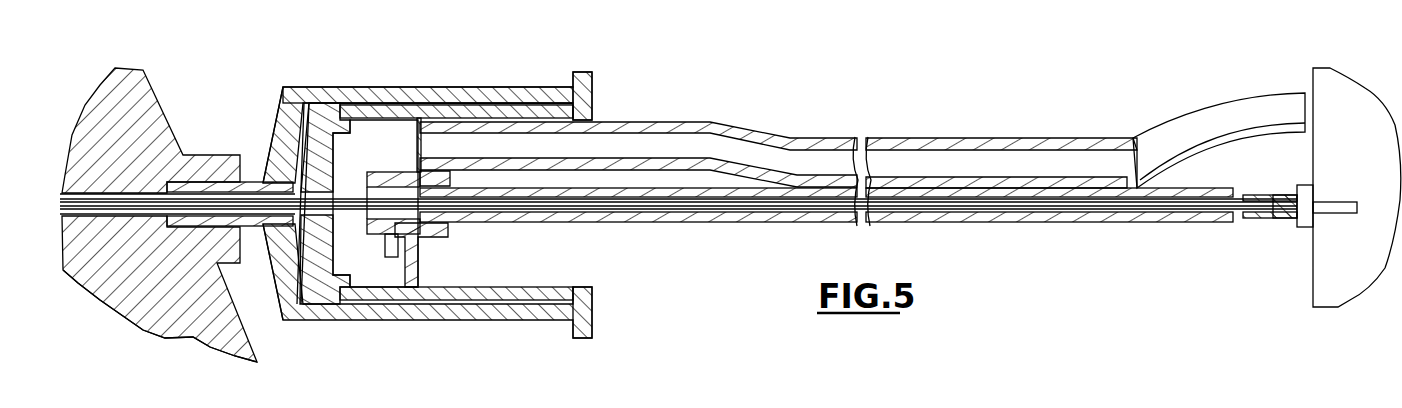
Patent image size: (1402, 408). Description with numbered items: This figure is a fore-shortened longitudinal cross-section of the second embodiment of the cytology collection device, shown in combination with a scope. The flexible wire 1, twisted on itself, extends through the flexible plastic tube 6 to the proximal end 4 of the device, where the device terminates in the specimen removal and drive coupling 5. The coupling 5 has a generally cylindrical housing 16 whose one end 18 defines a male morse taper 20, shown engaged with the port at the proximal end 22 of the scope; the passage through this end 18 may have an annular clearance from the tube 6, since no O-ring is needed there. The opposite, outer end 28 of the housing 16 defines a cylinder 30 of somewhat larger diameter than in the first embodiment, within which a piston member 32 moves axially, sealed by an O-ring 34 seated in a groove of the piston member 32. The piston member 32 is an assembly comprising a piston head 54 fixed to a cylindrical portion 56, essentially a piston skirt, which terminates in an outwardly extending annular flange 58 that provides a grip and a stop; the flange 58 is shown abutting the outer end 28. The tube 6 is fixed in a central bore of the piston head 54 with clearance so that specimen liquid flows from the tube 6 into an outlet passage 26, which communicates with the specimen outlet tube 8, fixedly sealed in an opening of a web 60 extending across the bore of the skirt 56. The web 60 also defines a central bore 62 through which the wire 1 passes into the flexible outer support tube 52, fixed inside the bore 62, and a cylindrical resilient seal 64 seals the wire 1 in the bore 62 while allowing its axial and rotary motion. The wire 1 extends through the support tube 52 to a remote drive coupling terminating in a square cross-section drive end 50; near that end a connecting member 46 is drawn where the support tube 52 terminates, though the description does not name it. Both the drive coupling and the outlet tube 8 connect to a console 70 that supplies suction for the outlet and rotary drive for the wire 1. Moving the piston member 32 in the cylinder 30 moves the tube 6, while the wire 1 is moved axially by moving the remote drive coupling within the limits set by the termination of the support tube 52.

The flexible wire 1 is at (73, 198).
The proximal end 4 is at (126, 180).
The specimen removal and drive coupling 5 is at (428, 68).
The flexible plastic tube 6 is at (97, 218).
The specimen outlet tube 8 is at (696, 147).
The cylindrical housing 16 is at (388, 330).
The end 18 is at (248, 145).
The male morse taper 20 is at (212, 182).
The proximal end of the scope 22 is at (183, 323).
The outlet passage 26 is at (396, 146).
The outer end of the housing 28 is at (548, 322).
The cylinder 30 is at (312, 103).
The piston member 32 is at (492, 112).
The O-ring 34 is at (342, 103).
The coupling 46 is at (1270, 218).
The square cross-section drive end 50 is at (1318, 195).
The flexible outer support tube 52 is at (1010, 222).
The piston head 54 is at (321, 300).
The cylindrical portion 56 is at (479, 322).
The annular flange 58 is at (602, 83).
The web 60 is at (408, 262).
The central bore 62 is at (390, 240).
The cylindrical resilient seal 64 is at (372, 197).
The console 70 is at (1327, 95).